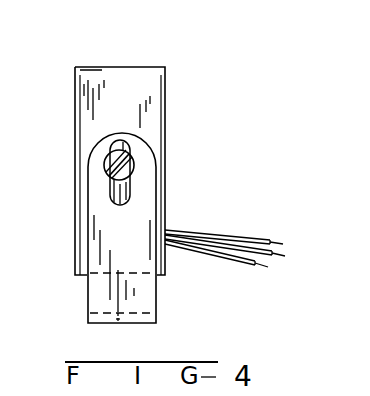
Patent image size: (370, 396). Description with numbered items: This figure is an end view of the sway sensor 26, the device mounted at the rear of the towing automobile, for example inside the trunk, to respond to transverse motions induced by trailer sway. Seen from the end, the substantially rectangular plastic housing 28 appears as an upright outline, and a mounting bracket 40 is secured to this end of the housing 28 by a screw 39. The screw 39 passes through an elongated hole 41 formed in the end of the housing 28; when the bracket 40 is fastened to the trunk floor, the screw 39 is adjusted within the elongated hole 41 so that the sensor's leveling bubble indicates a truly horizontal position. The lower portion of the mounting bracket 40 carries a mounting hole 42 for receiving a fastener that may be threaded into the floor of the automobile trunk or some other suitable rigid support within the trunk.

The sway sensor 26 is at (80, 60).
The housing 28 is at (80, 107).
The screws 39 is at (133, 167).
The mounting bracket 40 is at (95, 298).
The elongated holes 41 is at (138, 147).
The mounting holes 42 is at (118, 326).